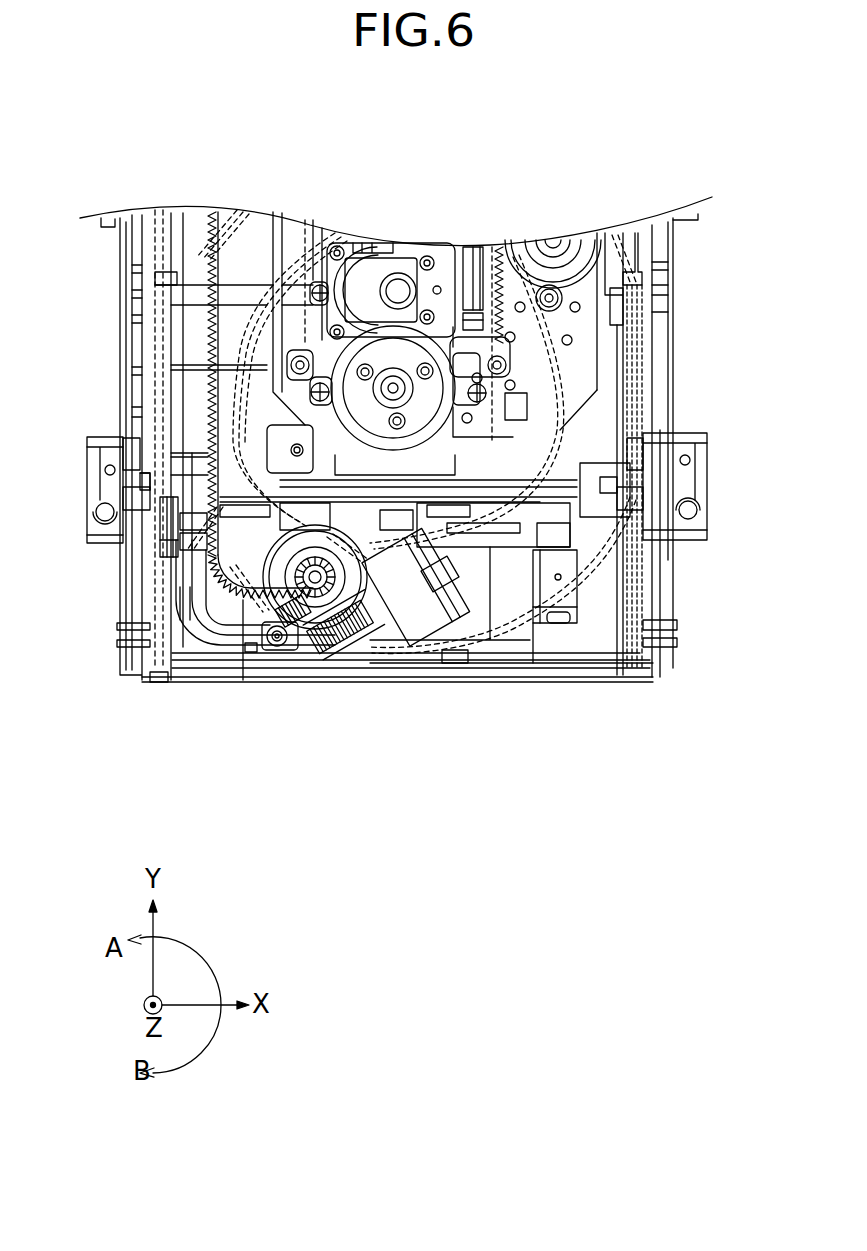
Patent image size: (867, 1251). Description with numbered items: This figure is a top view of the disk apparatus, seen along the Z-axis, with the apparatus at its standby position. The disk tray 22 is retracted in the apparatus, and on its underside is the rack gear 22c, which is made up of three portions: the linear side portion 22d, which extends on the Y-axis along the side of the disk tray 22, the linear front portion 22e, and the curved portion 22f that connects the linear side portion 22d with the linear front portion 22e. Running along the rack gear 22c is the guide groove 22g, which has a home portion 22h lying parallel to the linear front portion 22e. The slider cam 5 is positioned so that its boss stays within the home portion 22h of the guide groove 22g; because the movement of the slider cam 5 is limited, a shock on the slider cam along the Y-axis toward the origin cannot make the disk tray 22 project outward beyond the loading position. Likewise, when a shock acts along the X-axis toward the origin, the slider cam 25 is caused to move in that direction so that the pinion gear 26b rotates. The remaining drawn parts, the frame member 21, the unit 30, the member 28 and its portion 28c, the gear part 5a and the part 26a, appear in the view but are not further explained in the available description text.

The chassis frame 21 is at (675, 273).
The gear unit 30 is at (583, 360).
The holder frame 28 is at (600, 408).
The holder frame portion 28c is at (520, 640).
The disk tray 22 is at (200, 680).
The rack gear 22c is at (207, 495).
The linear side portion 22d is at (205, 440).
The linear front portion 22e is at (243, 680).
The curved portion 22f is at (213, 600).
The guide groove 22g is at (195, 588).
The home portion 22h is at (253, 647).
The slider cam 5 is at (525, 648).
The gear hub 5a is at (315, 597).
The slider cam 25 is at (427, 607).
The gear 26a is at (353, 620).
The pinion gear 26b is at (340, 597).